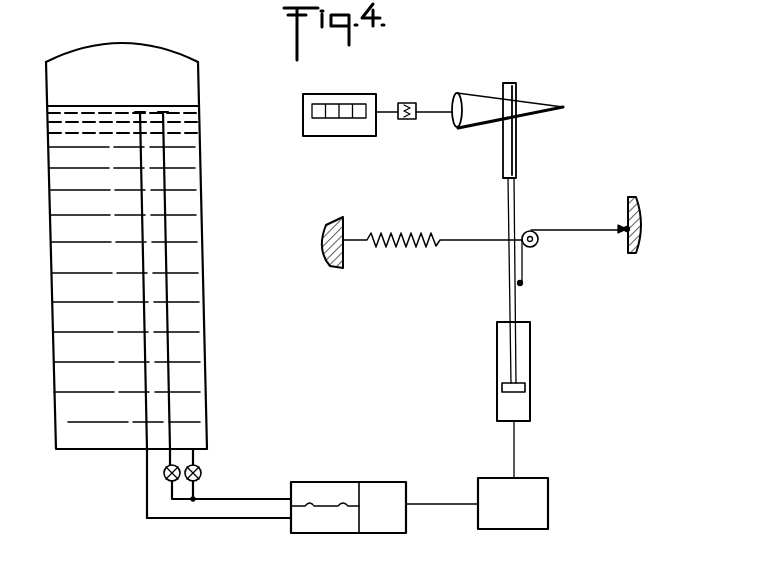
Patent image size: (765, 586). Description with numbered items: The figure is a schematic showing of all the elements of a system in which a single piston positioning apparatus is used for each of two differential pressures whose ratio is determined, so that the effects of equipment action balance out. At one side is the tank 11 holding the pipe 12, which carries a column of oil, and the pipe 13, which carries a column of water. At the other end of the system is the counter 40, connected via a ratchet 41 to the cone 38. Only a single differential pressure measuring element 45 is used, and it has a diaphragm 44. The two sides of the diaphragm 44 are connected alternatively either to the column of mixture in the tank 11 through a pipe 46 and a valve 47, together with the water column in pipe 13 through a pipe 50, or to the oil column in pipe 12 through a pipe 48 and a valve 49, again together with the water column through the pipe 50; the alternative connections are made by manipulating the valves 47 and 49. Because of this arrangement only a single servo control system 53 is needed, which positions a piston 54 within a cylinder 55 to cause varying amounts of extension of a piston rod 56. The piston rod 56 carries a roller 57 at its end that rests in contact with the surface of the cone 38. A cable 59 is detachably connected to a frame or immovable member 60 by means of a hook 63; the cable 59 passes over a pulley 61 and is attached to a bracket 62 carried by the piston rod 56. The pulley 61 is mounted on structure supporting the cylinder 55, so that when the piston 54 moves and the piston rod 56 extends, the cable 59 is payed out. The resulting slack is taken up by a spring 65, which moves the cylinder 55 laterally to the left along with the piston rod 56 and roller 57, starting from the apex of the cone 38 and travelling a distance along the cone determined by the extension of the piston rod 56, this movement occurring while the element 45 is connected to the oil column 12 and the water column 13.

The tank 11 is at (202, 234).
The pipe 12 is at (166, 178).
The pipe 13 is at (143, 310).
The cone 38 is at (470, 100).
The counter 40 is at (350, 80).
The ratchet 41 is at (403, 103).
The diaphragm 44 is at (318, 503).
The differential pressure measuring element 45 is at (371, 483).
The pipe 46 is at (199, 490).
The valve 47 is at (199, 466).
The pipe 48 is at (167, 489).
The valve 49 is at (164, 467).
The pipe 50 is at (178, 518).
The servo control system 53 is at (541, 498).
The piston 54 is at (526, 388).
The cylinder 55 is at (531, 355).
The piston rod 56 is at (516, 312).
The roller 57 is at (516, 151).
The cable 59 is at (571, 229).
The immovable member 60 is at (641, 216).
The pulley 61 is at (538, 244).
The bracket 62 is at (523, 285).
The hook 63 is at (625, 233).
The spring 65 is at (400, 250).